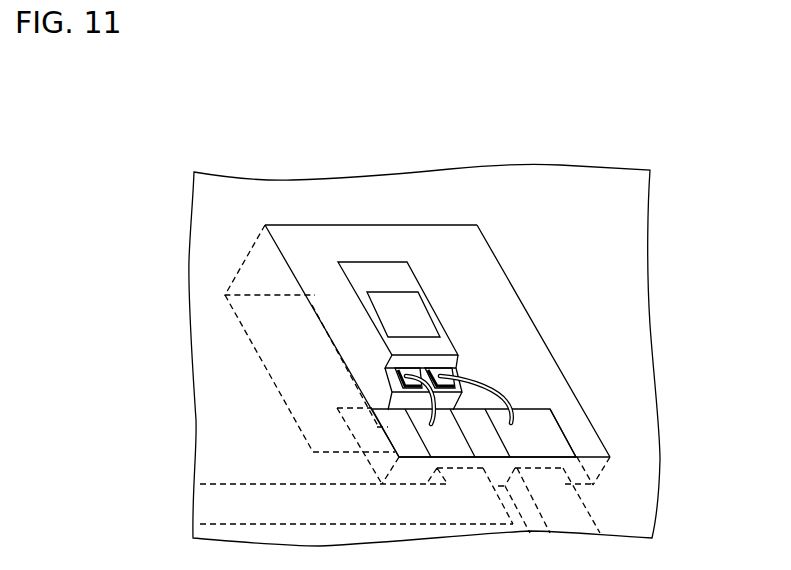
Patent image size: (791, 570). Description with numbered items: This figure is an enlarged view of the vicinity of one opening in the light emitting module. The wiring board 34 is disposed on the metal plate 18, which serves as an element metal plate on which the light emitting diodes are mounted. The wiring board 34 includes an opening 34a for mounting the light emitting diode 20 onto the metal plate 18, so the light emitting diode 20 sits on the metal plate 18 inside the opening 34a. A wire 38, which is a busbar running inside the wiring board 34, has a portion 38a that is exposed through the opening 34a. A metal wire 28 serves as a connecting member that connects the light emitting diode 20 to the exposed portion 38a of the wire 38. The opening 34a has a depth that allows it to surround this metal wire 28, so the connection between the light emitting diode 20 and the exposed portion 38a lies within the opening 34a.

The wiring board 34 is at (627, 242).
The opening 34a is at (487, 313).
The light emitting diode 20 is at (380, 275).
The metal plate 18 is at (435, 295).
The metal wire 28 is at (480, 378).
The wire (busbar) 38 is at (532, 441).
The exposed portion of the wire 38a is at (528, 422).